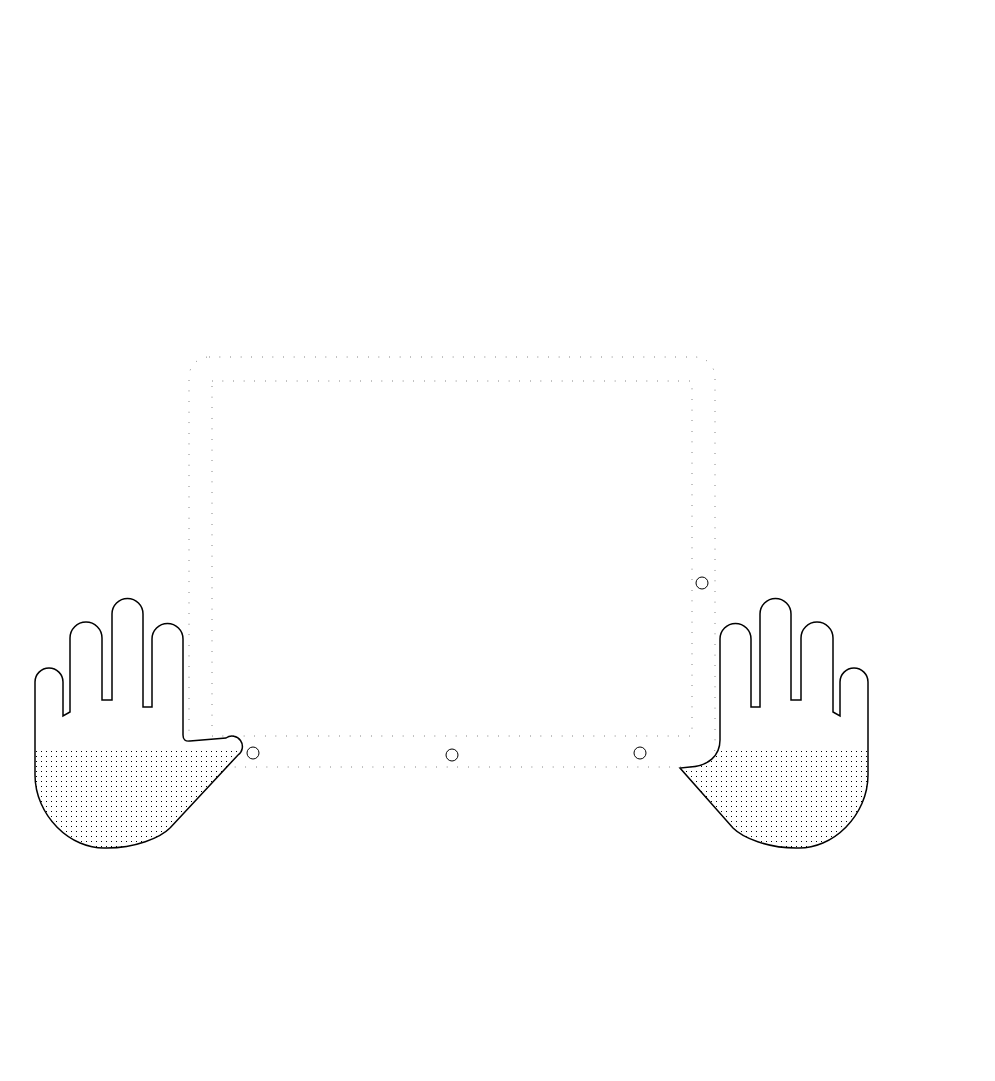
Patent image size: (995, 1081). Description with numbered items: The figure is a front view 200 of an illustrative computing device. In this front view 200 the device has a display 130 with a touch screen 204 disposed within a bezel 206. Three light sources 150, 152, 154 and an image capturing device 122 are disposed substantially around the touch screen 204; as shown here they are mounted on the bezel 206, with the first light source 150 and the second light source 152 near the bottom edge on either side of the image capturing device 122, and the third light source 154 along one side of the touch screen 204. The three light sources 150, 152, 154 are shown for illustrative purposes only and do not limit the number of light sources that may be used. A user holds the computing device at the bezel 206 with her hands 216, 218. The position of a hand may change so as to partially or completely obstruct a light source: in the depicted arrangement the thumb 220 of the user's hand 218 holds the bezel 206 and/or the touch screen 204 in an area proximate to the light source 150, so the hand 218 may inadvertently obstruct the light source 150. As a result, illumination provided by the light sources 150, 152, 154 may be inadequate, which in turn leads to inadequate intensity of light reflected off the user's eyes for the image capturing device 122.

The front view 200 is at (512, 60).
The display 130 is at (631, 356).
The bezel 206 is at (694, 369).
The touch screen 204 is at (395, 400).
The image capturing device 122 is at (451, 764).
The light source 150 is at (258, 755).
The light source 152 is at (633, 754).
The light source 154 is at (697, 572).
The hand 216 is at (794, 612).
The hand 218 is at (118, 598).
The thumb 220 is at (202, 762).